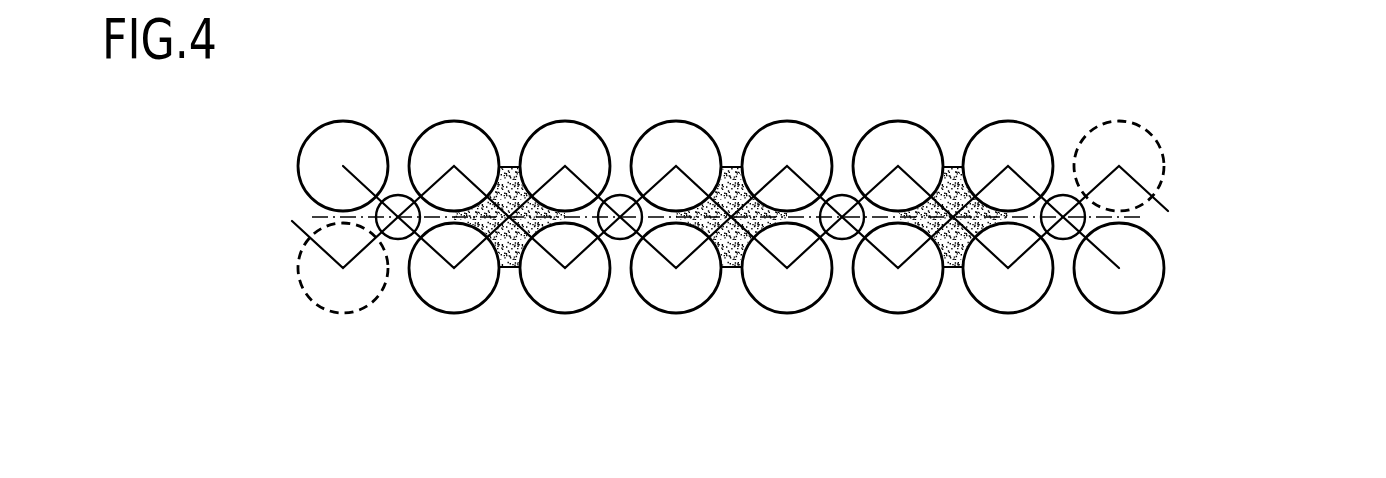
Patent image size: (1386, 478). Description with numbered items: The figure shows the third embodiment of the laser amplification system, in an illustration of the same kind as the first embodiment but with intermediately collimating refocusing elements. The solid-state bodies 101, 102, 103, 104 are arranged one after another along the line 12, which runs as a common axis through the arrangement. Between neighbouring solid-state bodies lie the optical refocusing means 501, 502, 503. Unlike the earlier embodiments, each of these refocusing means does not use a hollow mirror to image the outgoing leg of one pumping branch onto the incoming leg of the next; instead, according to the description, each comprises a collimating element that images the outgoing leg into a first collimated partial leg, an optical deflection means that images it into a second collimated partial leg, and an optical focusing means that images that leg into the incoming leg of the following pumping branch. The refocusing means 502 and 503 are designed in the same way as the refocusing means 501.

The solid-state body 101 is at (1062, 196).
The solid-state body 102 is at (841, 196).
The solid-state body 103 is at (624, 196).
The solid-state body 104 is at (403, 196).
The optical refocusing means 501 is at (955, 268).
The optical refocusing means 502 is at (734, 268).
The optical refocusing means 503 is at (512, 290).
The line 12 is at (1170, 209).